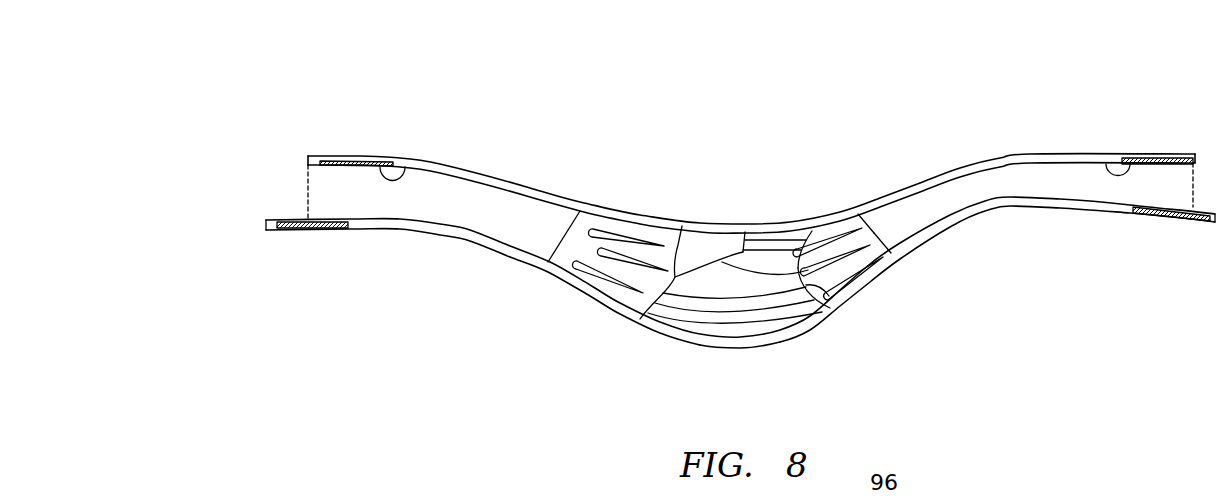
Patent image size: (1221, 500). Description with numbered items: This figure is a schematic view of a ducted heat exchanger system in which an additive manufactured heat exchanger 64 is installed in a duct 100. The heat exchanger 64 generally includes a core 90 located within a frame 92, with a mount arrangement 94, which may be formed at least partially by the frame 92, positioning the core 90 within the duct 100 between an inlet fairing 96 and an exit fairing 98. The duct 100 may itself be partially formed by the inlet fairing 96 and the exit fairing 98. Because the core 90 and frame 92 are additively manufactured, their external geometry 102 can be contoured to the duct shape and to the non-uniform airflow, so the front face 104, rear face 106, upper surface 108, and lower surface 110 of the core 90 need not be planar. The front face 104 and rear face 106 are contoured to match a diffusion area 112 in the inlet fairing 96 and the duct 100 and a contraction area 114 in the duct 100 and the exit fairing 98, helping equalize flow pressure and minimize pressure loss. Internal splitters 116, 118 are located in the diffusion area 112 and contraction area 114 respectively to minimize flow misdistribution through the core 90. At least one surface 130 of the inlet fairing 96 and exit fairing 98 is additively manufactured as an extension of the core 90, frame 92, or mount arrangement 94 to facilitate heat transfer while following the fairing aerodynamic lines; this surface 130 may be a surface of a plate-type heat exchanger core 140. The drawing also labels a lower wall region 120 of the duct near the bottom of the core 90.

The additive manufactured heat exchanger 64 is at (822, 117).
The core 90 is at (803, 342).
The frame 92 is at (709, 223).
The mount arrangement 94 is at (796, 222).
The inlet fairing 96 is at (423, 105).
The exit fairing 98 is at (1016, 150).
The duct 100 is at (635, 213).
The external geometry 102 is at (745, 224).
The front face 104 is at (682, 226).
The rear face 106 is at (814, 238).
The upper surface 108 is at (774, 222).
The lower surface 110 is at (723, 349).
The diffusion area 112 is at (570, 265).
The contraction area 114 is at (893, 257).
The internal splitter 116 is at (596, 230).
The internal splitter 118 is at (878, 200).
The lower wall 120 is at (655, 331).
The surface 130 is at (290, 219).
The heat exchanger core 140 is at (353, 158).